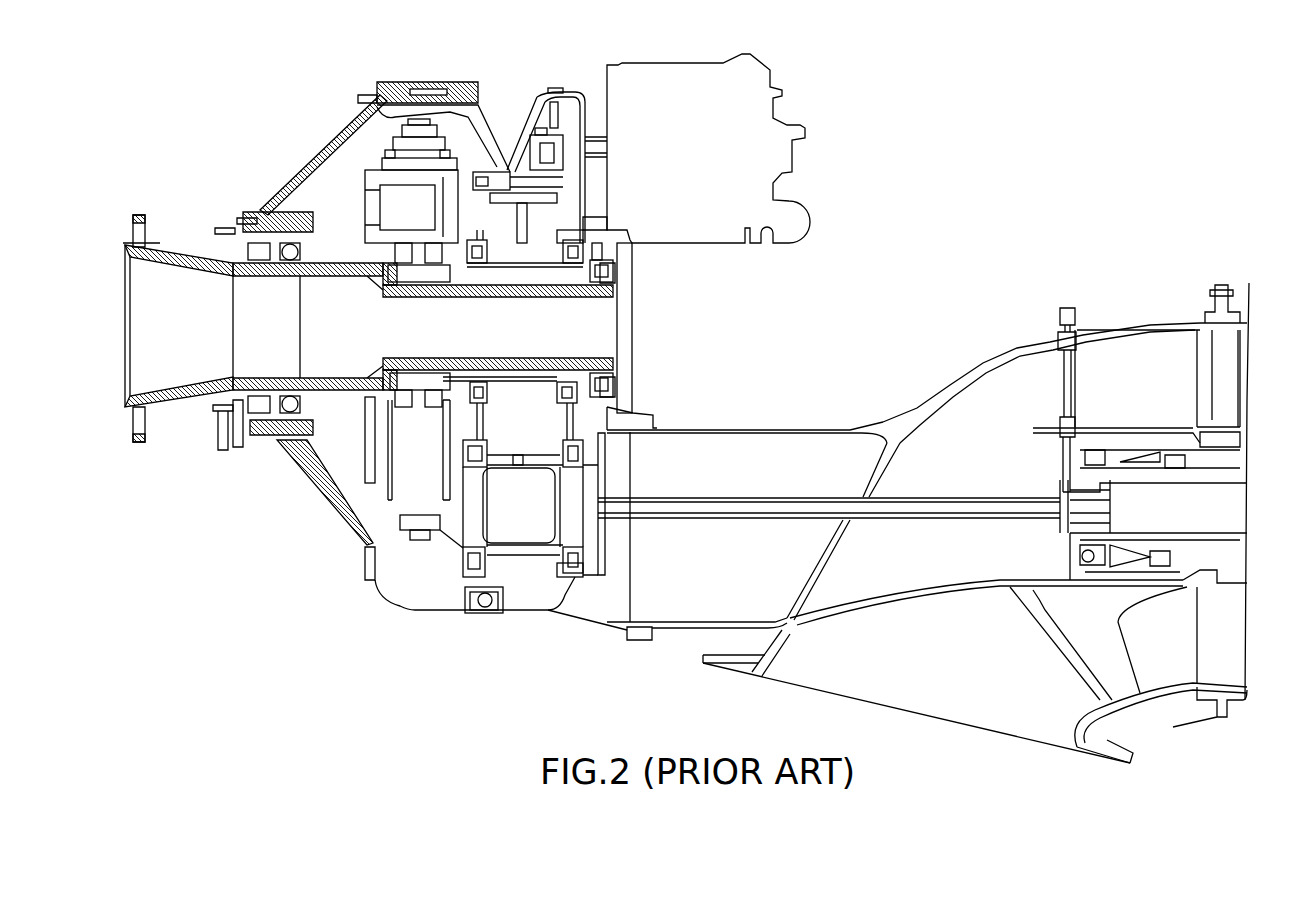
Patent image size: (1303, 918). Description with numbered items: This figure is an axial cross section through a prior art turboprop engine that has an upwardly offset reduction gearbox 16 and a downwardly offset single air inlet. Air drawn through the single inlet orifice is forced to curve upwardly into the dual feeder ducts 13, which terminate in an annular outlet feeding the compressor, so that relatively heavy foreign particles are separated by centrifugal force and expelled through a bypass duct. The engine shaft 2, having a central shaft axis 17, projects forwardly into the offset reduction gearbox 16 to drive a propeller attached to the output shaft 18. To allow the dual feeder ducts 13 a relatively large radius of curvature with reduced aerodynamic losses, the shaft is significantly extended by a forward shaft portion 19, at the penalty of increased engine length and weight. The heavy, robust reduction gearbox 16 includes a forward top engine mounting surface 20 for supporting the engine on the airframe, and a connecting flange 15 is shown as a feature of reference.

The engine shaft 2 is at (1192, 468).
The dual feeder ducts 13 is at (1010, 353).
The connecting flange 15 is at (1133, 755).
The reduction gearbox 16 is at (294, 478).
The central shaft axis 17 is at (1088, 495).
The output shaft 18 is at (173, 250).
The forward shaft portion 19 is at (740, 493).
The forward top engine mounting surface 20 is at (430, 82).